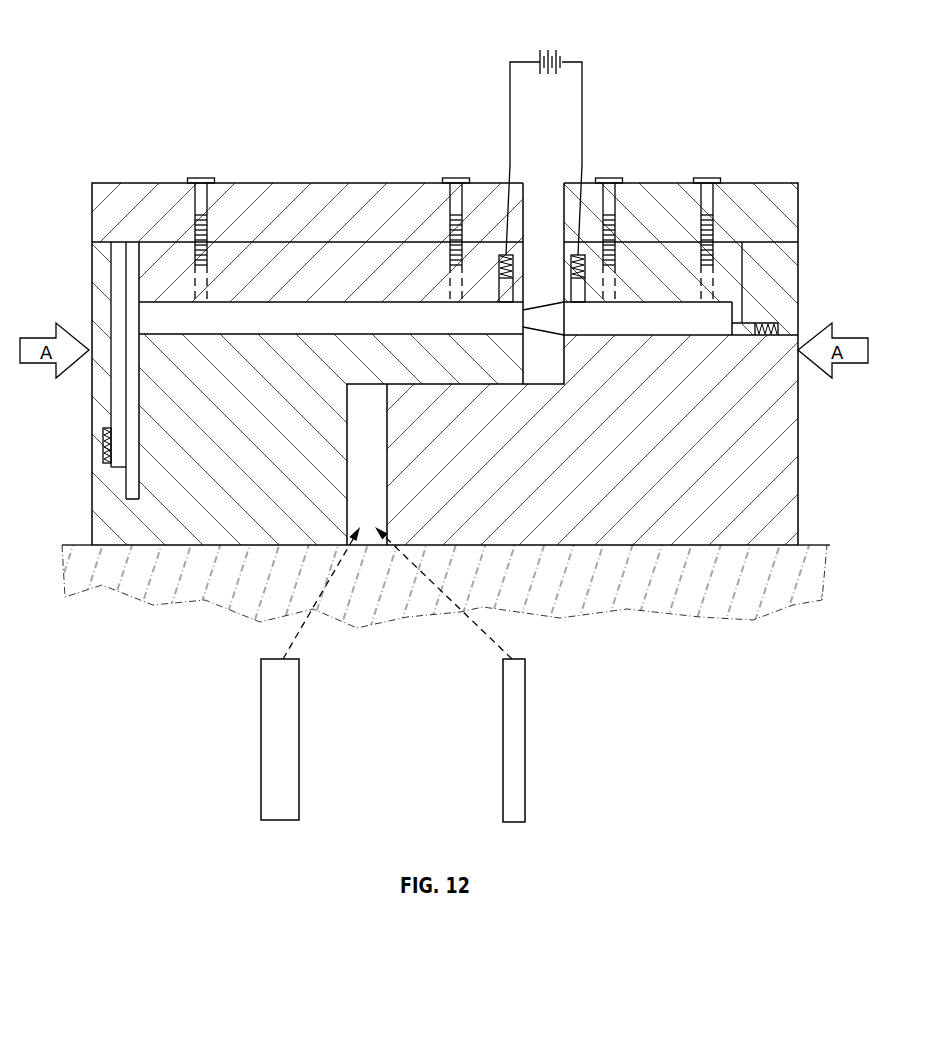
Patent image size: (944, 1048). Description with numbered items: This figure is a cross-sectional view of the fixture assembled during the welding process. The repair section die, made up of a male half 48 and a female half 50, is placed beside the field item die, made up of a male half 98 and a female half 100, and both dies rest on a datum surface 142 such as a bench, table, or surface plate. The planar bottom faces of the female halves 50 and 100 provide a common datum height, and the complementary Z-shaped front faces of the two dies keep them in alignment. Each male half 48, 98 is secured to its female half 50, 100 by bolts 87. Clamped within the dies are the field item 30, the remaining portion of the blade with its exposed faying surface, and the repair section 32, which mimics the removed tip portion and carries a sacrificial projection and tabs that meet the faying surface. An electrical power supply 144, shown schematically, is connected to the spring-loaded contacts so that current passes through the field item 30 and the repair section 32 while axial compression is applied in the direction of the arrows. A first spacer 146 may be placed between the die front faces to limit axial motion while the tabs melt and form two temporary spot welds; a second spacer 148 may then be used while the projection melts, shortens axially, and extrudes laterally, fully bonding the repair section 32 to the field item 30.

The bolts 87 is at (203, 178).
The male half 98 is at (243, 228).
The male half 48 is at (642, 224).
The field item 30 is at (313, 331).
The repair section 32 is at (632, 329).
The female half 100 is at (232, 441).
The female half 50 is at (625, 448).
The datum surface 142 is at (724, 588).
The electrical power supply 144 is at (560, 62).
The first spacer 146 is at (296, 748).
The second spacer 148 is at (515, 705).